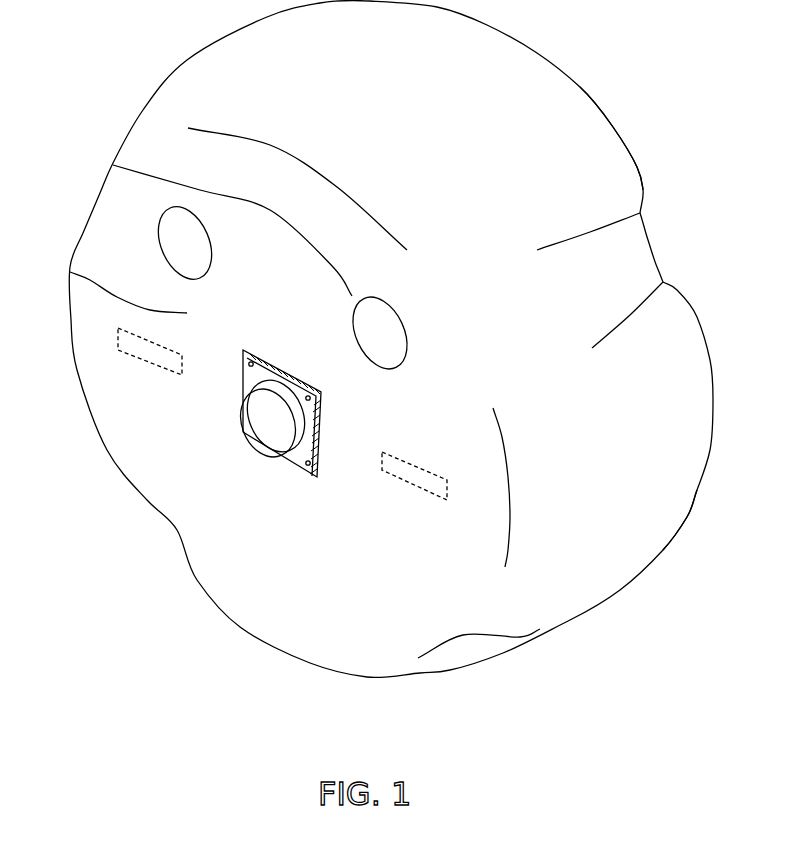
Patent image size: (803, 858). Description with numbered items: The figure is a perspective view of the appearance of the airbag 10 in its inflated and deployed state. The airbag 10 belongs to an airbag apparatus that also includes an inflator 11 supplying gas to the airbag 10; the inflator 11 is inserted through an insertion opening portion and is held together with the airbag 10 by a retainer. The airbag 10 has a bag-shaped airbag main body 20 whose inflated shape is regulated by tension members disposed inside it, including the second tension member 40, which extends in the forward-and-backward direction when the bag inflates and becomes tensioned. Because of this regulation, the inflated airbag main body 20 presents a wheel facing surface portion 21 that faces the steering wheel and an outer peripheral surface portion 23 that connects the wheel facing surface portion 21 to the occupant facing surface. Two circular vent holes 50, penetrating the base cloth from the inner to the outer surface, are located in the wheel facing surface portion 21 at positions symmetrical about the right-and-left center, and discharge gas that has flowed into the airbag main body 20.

The airbag 10 is at (122, 67).
The inflator 11 is at (270, 420).
The airbag main body 20 is at (583, 85).
The wheel facing surface portion 21 is at (70, 272).
The outer peripheral surface portion 23 is at (653, 462).
The second tension member 40 is at (149, 364).
The vent hole 50 is at (160, 205).